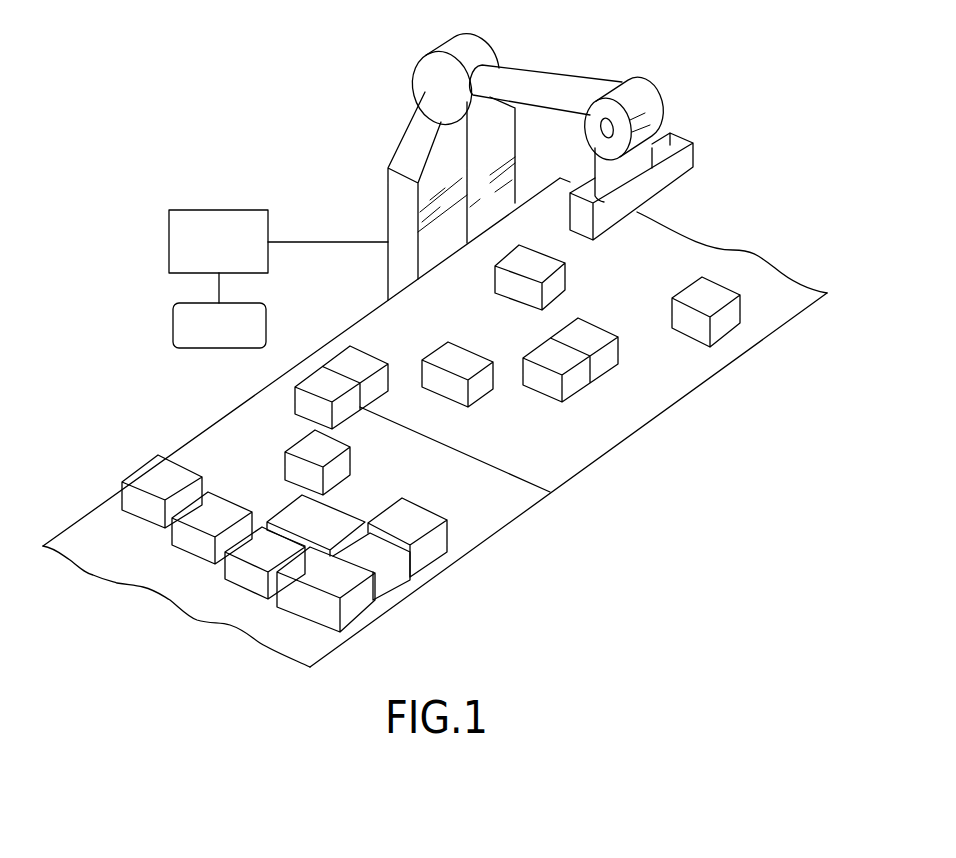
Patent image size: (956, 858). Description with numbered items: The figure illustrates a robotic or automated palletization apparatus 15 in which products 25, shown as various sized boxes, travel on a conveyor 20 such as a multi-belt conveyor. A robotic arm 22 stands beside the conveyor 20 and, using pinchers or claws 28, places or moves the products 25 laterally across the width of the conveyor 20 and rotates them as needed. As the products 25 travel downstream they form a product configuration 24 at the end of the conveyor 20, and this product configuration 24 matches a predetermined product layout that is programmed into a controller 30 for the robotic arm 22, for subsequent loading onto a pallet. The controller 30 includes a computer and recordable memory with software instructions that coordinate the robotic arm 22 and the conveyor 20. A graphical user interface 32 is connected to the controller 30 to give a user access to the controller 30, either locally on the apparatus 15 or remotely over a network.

The robotic or automated palletization apparatus 15 is at (757, 180).
The conveyor 20 is at (607, 453).
The robotic arm 22 is at (552, 75).
The product configuration 24 is at (507, 563).
The products 25 is at (712, 293).
The pinchers or claws 28 is at (693, 158).
The controller 30 is at (230, 210).
The graphical user interface (GUI) 32 is at (173, 328).